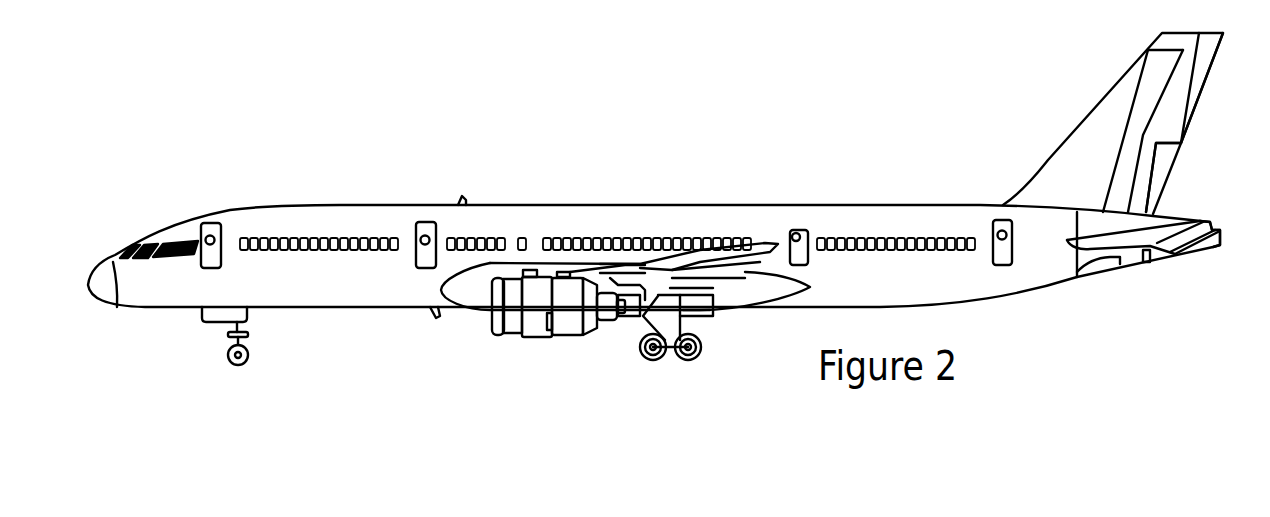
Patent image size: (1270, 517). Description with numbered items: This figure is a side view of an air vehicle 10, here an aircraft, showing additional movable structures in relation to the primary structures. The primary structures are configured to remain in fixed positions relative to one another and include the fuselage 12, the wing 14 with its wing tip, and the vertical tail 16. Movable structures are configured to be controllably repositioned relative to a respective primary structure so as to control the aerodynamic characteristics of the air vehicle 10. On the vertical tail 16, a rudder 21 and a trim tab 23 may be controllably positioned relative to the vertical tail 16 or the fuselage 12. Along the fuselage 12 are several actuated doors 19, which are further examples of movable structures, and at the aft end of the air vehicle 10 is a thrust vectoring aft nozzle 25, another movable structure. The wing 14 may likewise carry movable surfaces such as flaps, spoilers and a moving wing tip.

The air vehicle 10 is at (712, 128).
The fuselage 12 is at (876, 207).
The wing 14 is at (722, 245).
The vertical tail 16 is at (1112, 117).
The actuated doors 19 is at (206, 222).
The rudder 21 is at (1190, 86).
The trim tab 23 is at (1155, 175).
The thrust vectoring aft nozzle 25 is at (1220, 236).